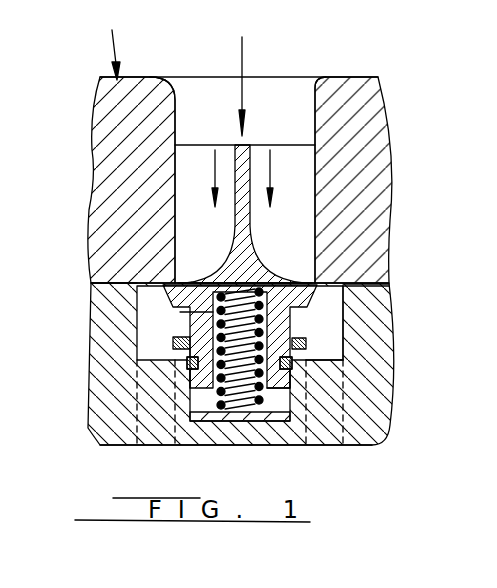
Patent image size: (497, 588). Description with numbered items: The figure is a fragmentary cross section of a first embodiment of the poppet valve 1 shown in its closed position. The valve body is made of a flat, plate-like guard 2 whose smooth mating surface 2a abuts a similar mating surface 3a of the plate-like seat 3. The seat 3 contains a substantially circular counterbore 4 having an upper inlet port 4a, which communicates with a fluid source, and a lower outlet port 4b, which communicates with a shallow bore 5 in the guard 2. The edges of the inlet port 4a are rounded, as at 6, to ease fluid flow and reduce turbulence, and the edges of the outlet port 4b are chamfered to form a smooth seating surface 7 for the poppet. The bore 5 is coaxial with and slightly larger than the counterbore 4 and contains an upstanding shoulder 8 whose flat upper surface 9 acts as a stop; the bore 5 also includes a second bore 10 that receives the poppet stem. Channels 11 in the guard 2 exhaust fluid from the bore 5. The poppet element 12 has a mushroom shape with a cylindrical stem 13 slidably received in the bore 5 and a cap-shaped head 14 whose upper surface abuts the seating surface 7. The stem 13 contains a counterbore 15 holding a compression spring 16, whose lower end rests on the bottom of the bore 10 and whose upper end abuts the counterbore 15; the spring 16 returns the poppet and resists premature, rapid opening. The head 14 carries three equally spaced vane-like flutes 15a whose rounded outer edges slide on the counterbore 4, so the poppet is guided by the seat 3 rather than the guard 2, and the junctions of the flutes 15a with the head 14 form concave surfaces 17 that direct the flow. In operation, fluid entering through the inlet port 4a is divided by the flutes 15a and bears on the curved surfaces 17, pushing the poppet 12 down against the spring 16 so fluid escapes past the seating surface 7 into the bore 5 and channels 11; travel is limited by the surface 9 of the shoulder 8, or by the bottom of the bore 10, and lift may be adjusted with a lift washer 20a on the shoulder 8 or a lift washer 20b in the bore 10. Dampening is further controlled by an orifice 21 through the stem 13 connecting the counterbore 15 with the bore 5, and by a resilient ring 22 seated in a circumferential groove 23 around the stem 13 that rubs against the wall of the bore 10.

The poppet valve 1 is at (109, 46).
The guard 2 is at (378, 433).
The mating surface 2a is at (372, 292).
The seat 3 is at (380, 229).
The mating surface 3a is at (386, 286).
The counterbore 4 is at (217, 77).
The inlet port 4a is at (278, 77).
The outlet port 4b is at (345, 303).
The bore 5 is at (182, 347).
The rounded edges 6 is at (170, 77).
The seating surface 7 is at (245, 290).
The shoulder 8 is at (187, 363).
The upper surface 9 is at (176, 340).
The bore 10 is at (140, 446).
The channels 11 is at (90, 432).
The poppet element 12 is at (197, 108).
The stem 13 is at (300, 345).
The head 14 is at (188, 281).
The counterbore 15 is at (264, 405).
The flutes 15a is at (241, 146).
The compression spring 16 is at (224, 404).
The concave surfaces 17 is at (230, 241).
The lift washer 20a is at (344, 361).
The lift washer 20b is at (290, 415).
The orifice 21 is at (190, 322).
The resilient ring 22 is at (192, 372).
The circumferential groove 23 is at (214, 402).